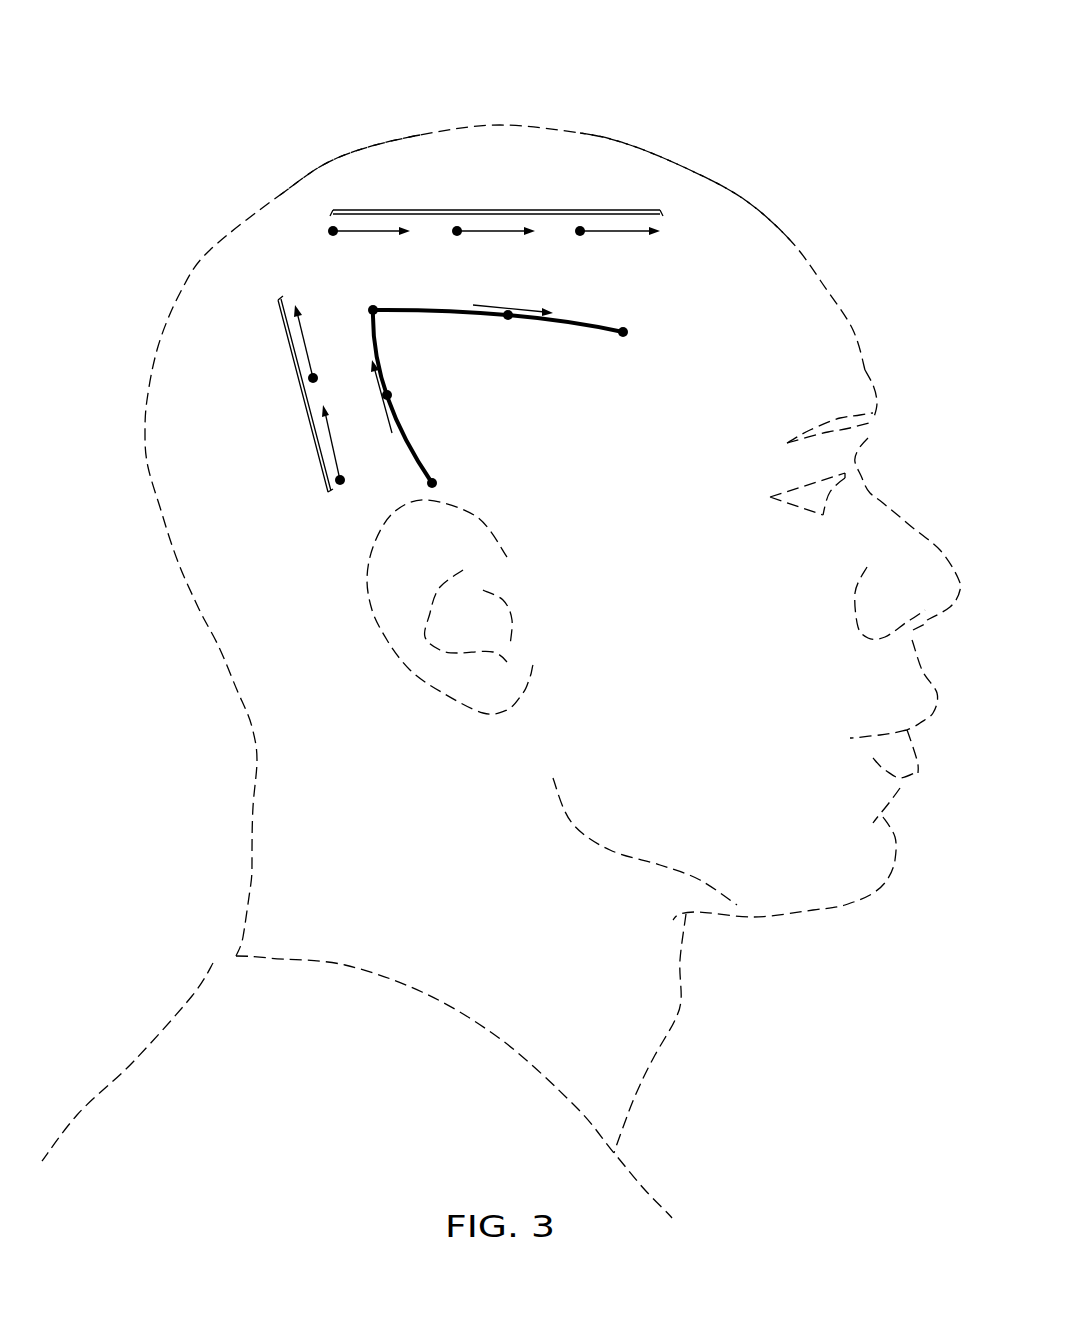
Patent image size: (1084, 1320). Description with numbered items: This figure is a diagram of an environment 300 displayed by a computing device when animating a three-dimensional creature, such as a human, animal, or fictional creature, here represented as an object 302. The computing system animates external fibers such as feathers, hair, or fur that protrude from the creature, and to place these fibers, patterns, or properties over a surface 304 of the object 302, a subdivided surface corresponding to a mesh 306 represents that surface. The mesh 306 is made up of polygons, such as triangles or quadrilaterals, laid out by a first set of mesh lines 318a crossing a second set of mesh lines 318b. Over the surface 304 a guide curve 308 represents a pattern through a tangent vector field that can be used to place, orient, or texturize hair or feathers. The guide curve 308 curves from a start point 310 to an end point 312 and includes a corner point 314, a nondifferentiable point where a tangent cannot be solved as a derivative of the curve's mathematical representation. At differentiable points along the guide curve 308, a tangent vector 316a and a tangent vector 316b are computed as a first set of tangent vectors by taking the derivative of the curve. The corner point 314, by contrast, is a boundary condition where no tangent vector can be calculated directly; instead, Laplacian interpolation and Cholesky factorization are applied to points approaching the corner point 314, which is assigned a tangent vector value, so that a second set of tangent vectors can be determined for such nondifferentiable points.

The environment 300 is at (643, 50).
The object 302 is at (765, 977).
The surface 304 is at (713, 183).
The mesh 306 is at (363, 157).
The guide curve 308 is at (417, 458).
The start point 310 is at (443, 485).
The end point 312 is at (633, 327).
The corner point 314 is at (365, 307).
The tangent vector 316a is at (395, 390).
The tangent vector 316b is at (512, 325).
The first set of mesh lines 318a is at (300, 389).
The second set of mesh lines 318b is at (504, 210).